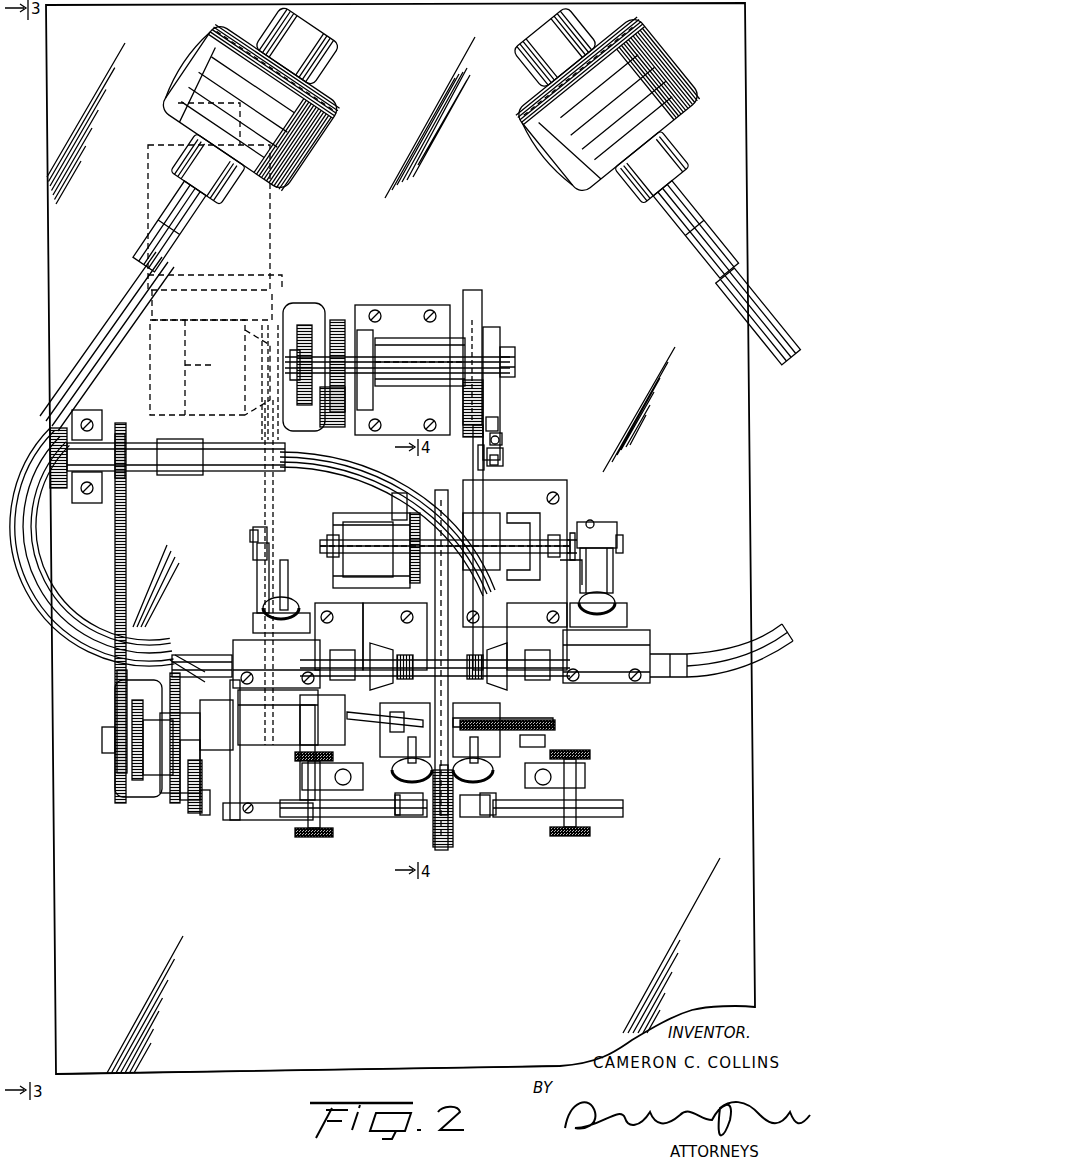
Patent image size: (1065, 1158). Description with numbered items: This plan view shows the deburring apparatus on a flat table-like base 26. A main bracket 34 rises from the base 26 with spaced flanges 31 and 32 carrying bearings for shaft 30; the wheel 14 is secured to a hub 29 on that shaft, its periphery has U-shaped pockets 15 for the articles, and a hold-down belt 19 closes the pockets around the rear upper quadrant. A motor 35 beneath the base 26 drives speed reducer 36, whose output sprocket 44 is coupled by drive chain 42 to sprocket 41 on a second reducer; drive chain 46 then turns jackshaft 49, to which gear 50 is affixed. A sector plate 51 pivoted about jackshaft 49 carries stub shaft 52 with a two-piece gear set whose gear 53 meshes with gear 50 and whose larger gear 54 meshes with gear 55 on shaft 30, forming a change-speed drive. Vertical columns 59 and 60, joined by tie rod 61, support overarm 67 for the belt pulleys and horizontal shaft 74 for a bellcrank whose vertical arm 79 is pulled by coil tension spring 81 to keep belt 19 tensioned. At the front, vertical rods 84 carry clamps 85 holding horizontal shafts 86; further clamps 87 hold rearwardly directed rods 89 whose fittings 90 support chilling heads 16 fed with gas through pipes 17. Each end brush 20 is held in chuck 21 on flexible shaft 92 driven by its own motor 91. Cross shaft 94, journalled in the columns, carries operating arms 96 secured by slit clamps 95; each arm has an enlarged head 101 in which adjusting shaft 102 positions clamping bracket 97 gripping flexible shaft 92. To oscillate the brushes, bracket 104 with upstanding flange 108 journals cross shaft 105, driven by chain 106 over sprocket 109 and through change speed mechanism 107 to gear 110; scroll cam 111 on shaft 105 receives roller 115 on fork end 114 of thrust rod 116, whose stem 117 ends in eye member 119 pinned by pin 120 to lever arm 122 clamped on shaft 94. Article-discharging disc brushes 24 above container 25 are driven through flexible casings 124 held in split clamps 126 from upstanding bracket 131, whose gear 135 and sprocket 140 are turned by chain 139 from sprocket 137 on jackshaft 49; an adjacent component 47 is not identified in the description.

The wheel 14 is at (456, 832).
The pockets 15 is at (435, 822).
The chilling heads 16 is at (430, 707).
The pipe 17 is at (360, 715).
The hold-down belt 19 is at (415, 800).
The end brush 20 is at (490, 640).
The chuck 21 is at (345, 655).
The disc-like brushes 24 is at (532, 727).
The container 25 is at (562, 580).
The base 26 is at (222, 1068).
The hub 29 is at (380, 752).
The supporting shaft 30 is at (242, 762).
The flange 31 is at (305, 712).
The flange 32 is at (226, 705).
The main bracket 34 is at (249, 815).
The motor 35 is at (290, 232).
The speed reducer 36 is at (175, 345).
The sprocket 41 is at (235, 650).
The drive chain 42 is at (262, 494).
The sprocket 44 is at (275, 420).
The drive chain 46 is at (148, 765).
The gear 47 is at (125, 702).
The jackshaft 49 is at (106, 742).
The gear 50 is at (182, 722).
The sector plate 51 is at (190, 832).
The stub shaft 52 is at (168, 742).
The gear 53 is at (205, 816).
The gear 54 is at (190, 805).
The gear 55 is at (180, 660).
The vertical column 59 is at (545, 520).
The vertical column 60 is at (340, 530).
The tie rod 61 is at (525, 532).
The overarm 67 is at (446, 588).
The horizontal shaft 74 is at (375, 545).
The vertical arm 79 is at (398, 495).
The coil tension spring 81 is at (410, 537).
The rods 84 is at (316, 832).
The clamp 85 is at (483, 803).
The horizontal shaft 86 is at (396, 812).
The clamp 87 is at (466, 822).
The rod 89 is at (400, 755).
The fitting 90 is at (400, 714).
The motor 91 is at (192, 76).
The flexible shaft 92 is at (96, 318).
The cross shaft 94 is at (623, 540).
The slit clamp means 95 is at (612, 522).
The operating and supporting arm 96 is at (613, 575).
The clamping bracket 97 is at (625, 630).
The enlarged head 101 is at (620, 605).
The adjusting shaft 102 is at (584, 603).
The bracket 104 is at (437, 295).
The cross shaft 105 is at (400, 340).
The chain 106 is at (338, 320).
The change speed mechanism 107 is at (317, 434).
The upstanding flange 108 is at (365, 335).
The sprocket 109 is at (305, 325).
The gear 110 is at (325, 318).
The scroll cam 111 is at (472, 300).
The lower fork end 114 is at (496, 340).
The roller 115 is at (506, 363).
The thrust rod 116 is at (498, 425).
The stem 117 is at (502, 440).
The eye member 119 is at (493, 462).
The pin 120 is at (503, 458).
The lever arm 122 is at (480, 470).
The flexible casing 124 is at (382, 452).
The split clamp 126 is at (350, 620).
The upstanding bracket 131 is at (74, 495).
The gear 135 is at (55, 438).
The sprocket 137 is at (115, 722).
The chain 139 is at (126, 557).
The sprocket 140 is at (127, 468).